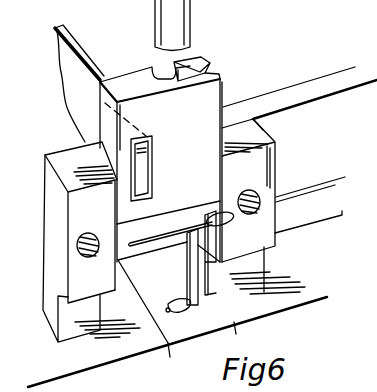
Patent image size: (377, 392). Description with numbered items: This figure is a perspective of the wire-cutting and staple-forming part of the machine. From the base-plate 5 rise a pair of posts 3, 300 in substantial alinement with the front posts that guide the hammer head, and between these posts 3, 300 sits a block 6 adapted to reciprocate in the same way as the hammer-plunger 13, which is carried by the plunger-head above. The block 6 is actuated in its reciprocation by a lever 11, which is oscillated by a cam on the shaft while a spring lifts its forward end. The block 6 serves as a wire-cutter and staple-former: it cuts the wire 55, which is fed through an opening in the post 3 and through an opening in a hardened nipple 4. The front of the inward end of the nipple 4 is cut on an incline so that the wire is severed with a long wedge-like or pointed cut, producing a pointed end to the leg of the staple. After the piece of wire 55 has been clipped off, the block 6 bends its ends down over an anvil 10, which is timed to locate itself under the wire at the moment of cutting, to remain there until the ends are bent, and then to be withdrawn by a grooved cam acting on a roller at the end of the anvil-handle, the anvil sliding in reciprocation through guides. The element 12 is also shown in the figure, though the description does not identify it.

The post 3 is at (274, 160).
The hardened nipple 4 is at (226, 203).
The base-plate 5 is at (185, 294).
The block 6 is at (161, 164).
The anvil 10 is at (174, 265).
The lever 11 is at (83, 62).
The wedge block 12 is at (193, 62).
The hammer-plunger 13 is at (183, 30).
The wire 55 is at (300, 134).
The post 300 is at (80, 242).